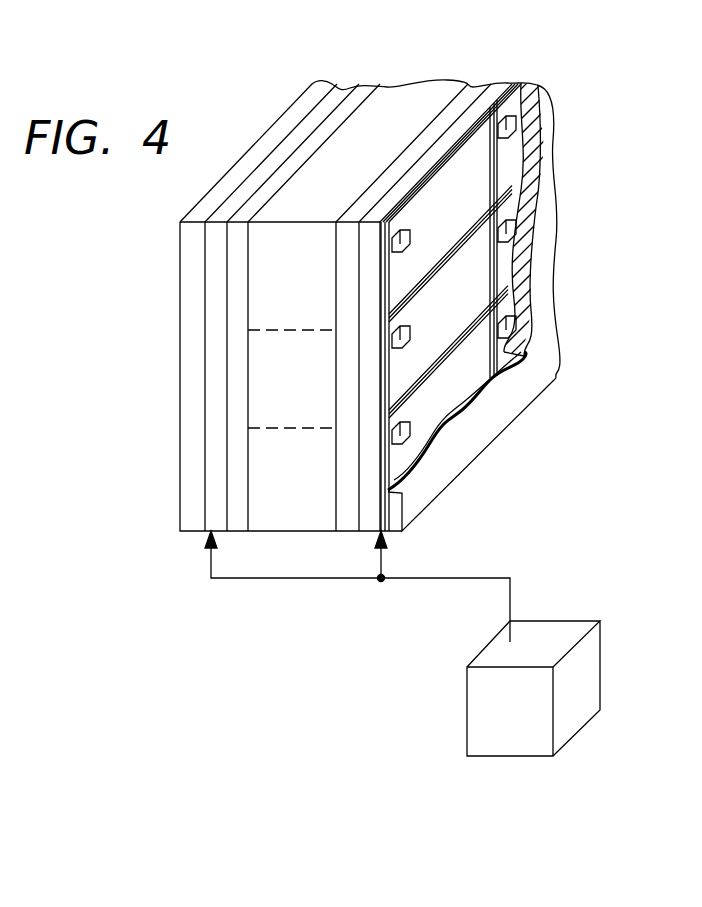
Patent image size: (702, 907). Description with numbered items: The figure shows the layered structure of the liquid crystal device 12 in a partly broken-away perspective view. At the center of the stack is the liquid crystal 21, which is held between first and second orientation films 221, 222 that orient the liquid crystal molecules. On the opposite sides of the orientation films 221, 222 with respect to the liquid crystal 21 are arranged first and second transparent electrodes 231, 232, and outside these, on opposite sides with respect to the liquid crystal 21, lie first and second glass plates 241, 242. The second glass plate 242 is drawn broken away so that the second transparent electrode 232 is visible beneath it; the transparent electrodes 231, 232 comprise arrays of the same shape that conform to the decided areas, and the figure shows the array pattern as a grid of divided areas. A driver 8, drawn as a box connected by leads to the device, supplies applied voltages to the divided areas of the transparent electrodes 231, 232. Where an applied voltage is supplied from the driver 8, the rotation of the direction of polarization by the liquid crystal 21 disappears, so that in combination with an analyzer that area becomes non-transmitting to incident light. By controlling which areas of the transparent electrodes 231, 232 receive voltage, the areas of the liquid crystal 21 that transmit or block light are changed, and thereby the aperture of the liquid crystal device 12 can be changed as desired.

The liquid crystal device 12 is at (278, 95).
The liquid crystal 21 is at (395, 102).
The first orientation film 221 is at (237, 297).
The second orientation film 222 is at (472, 95).
The first transparent electrode 231 is at (215, 415).
The second transparent electrode 232 is at (503, 90).
The first glass plate 241 is at (193, 500).
The second glass plate 242 is at (483, 432).
The driver 8 is at (558, 632).